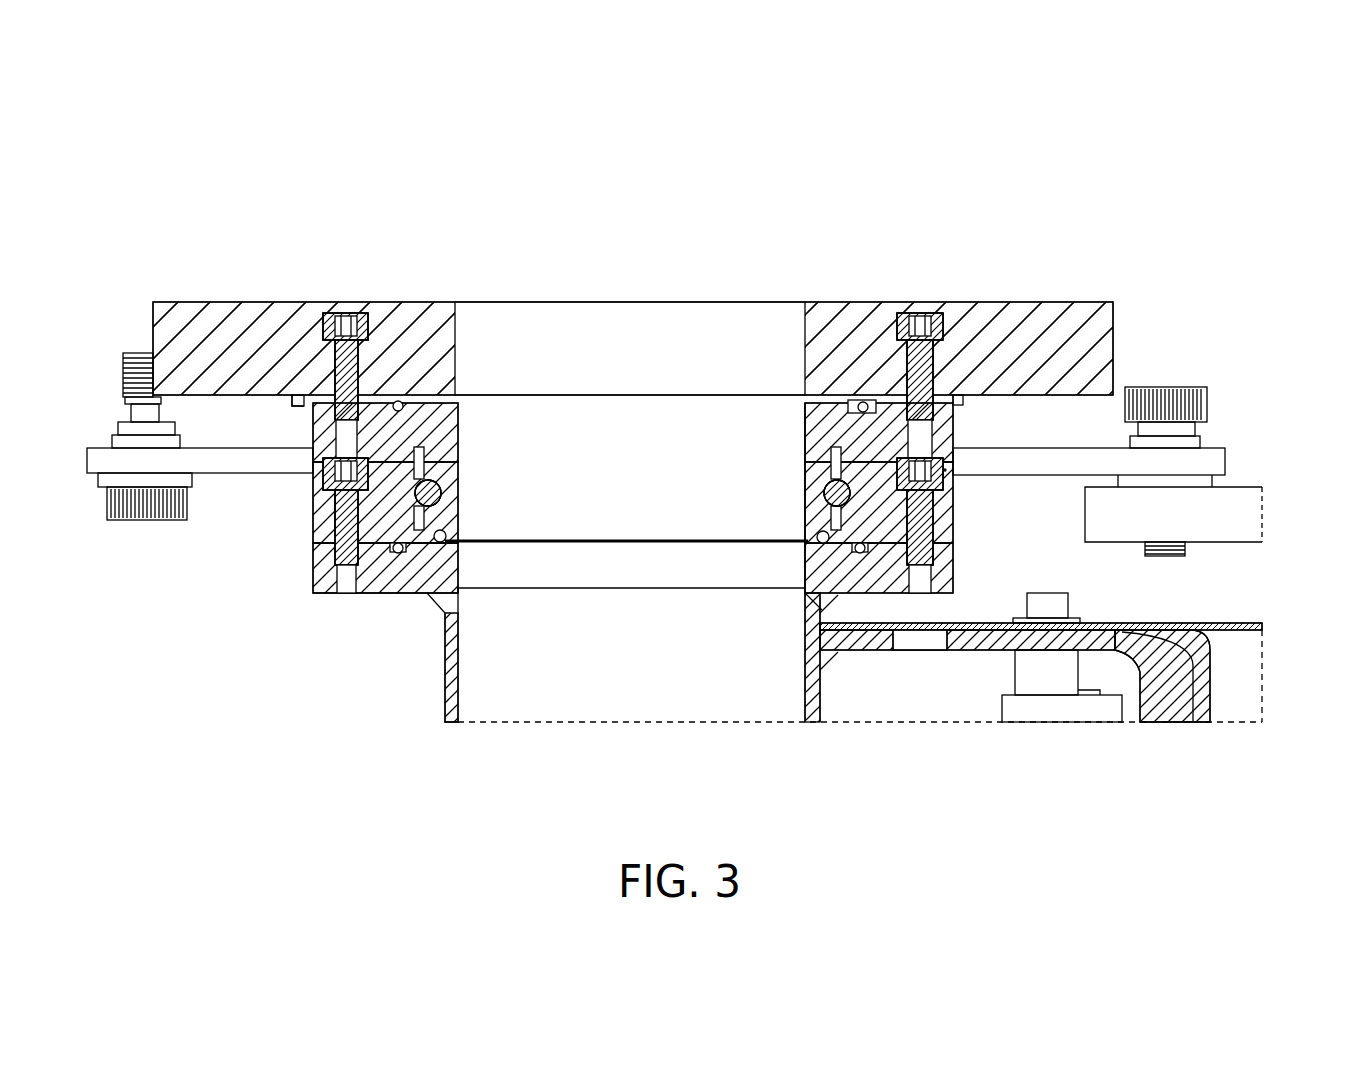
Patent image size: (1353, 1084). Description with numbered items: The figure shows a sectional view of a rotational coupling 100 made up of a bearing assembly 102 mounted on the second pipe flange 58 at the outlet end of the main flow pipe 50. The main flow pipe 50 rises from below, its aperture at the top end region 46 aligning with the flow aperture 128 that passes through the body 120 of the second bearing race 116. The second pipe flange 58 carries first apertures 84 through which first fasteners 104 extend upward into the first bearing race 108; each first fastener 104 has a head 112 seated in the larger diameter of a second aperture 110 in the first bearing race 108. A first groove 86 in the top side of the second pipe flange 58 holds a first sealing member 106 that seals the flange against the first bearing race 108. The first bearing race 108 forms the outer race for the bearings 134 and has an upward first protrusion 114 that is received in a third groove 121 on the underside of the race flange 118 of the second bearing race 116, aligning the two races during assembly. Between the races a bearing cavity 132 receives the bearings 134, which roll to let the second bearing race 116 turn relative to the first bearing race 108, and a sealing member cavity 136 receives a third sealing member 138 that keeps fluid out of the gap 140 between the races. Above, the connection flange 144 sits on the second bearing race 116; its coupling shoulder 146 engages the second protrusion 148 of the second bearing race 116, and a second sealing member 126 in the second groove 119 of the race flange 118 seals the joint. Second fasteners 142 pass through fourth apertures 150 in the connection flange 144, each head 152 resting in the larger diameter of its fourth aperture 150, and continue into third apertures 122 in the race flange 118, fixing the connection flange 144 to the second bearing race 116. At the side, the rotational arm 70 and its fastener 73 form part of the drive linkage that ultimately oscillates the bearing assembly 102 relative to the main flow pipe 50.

The rotational coupling 100 is at (701, 496).
The bearing assembly 102 is at (701, 429).
The connection flange 144 is at (1116, 336).
The flow aperture 128 is at (574, 440).
The second fasteners 142 is at (222, 328).
The head 152 is at (323, 333).
The fourth apertures 150 is at (938, 322).
The first bearing race 108 is at (561, 429).
The coupling shoulder 146 is at (298, 410).
The second apertures 110 is at (337, 497).
The second pipe flange 58 is at (318, 590).
The head 112 is at (318, 478).
The first fasteners 104 is at (337, 530).
The first apertures 84 is at (347, 593).
The third apertures 122 is at (378, 400).
The body 120 is at (458, 462).
The first protrusion 114 is at (430, 456).
The first groove 86 is at (440, 545).
The first sealing member 106 is at (375, 598).
The second bearing race 116 is at (805, 428).
The third groove 121 is at (838, 445).
The bearing cavity 132 is at (850, 493).
The gap 140 is at (957, 455).
The second sealing member 126 is at (858, 402).
The second groove 119 is at (840, 398).
The bearings 134 is at (835, 490).
The sealing member cavity 136 is at (820, 532).
The third sealing member 138 is at (806, 550).
The race flange 118 is at (945, 418).
The second protrusion 148 is at (292, 400).
The fastener 73 is at (1207, 400).
The rotational arm 70 is at (1253, 507).
The top end region 46 is at (445, 667).
The main flow pipe 50 is at (440, 705).